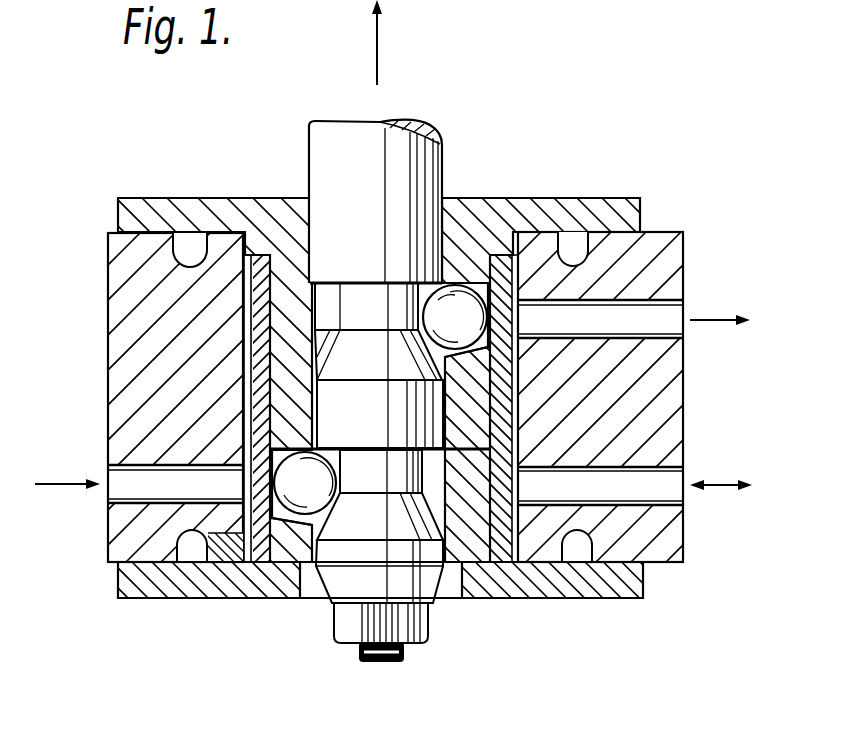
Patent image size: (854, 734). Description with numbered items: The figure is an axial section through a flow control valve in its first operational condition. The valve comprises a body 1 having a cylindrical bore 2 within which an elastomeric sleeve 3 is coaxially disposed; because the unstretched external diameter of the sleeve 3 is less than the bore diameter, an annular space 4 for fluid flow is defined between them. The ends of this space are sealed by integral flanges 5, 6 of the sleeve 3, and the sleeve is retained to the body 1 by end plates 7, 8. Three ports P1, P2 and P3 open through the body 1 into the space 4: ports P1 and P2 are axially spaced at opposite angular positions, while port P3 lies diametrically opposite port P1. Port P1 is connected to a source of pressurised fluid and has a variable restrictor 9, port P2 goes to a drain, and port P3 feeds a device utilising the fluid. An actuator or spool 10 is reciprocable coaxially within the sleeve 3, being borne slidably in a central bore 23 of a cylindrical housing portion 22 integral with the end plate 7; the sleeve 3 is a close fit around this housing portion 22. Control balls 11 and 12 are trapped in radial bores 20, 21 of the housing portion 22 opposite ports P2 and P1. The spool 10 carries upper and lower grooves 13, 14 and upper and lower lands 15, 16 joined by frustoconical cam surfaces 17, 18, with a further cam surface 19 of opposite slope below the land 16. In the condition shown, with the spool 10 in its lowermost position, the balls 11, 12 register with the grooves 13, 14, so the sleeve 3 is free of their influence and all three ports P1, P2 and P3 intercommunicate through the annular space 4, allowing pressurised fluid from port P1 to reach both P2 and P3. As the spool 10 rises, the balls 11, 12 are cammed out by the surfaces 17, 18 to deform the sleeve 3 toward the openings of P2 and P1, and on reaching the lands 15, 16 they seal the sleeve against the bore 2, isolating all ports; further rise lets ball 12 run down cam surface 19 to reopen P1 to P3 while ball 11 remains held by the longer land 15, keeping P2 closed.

The body 1 is at (692, 252).
The cylindrical bore 2 is at (520, 418).
The elastomeric sleeve 3 is at (247, 362).
The annular space 4 is at (525, 447).
The integral flange 5 is at (566, 240).
The integral flange 6 is at (573, 535).
The end plate 7 is at (625, 207).
The end plate 8 is at (645, 590).
The variable restrictor 9 is at (108, 497).
The spool 10 is at (452, 146).
The ball 11 is at (478, 330).
The ball 12 is at (307, 504).
The upper groove 13 is at (383, 321).
The lower groove 14 is at (383, 484).
The upper land 15 is at (374, 437).
The lower land 16 is at (330, 570).
The frustoconical cam surface 17 is at (379, 374).
The frustoconical cam surface 18 is at (379, 532).
The frustoconical cam surface 19 is at (368, 590).
The radial bore 20 is at (462, 306).
The radial bore 21 is at (270, 536).
The cylindrical housing portion 22 is at (280, 320).
The central bore 23 is at (288, 292).
The port P1 is at (225, 462).
The port P2 is at (537, 323).
The port P3 is at (537, 487).